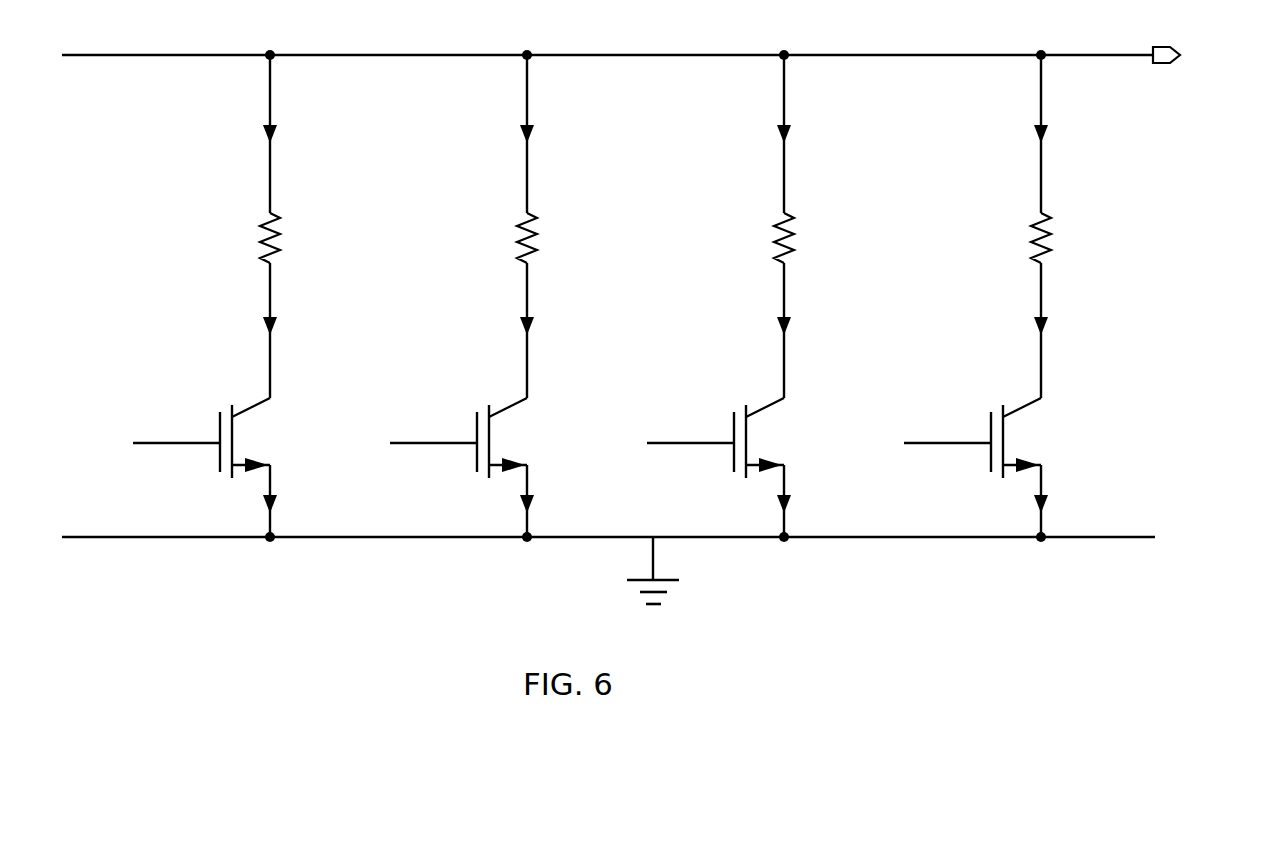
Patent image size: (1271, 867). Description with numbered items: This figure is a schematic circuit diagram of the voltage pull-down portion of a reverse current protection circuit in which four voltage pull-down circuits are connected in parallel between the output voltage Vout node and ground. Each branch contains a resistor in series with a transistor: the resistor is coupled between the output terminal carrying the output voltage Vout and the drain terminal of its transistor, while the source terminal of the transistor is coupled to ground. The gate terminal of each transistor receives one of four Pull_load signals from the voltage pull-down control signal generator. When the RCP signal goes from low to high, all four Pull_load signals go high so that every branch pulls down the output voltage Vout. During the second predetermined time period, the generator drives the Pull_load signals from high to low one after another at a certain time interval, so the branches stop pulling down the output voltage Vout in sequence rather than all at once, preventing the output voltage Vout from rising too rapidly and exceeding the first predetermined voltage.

The output voltage Vout is at (1197, 55).